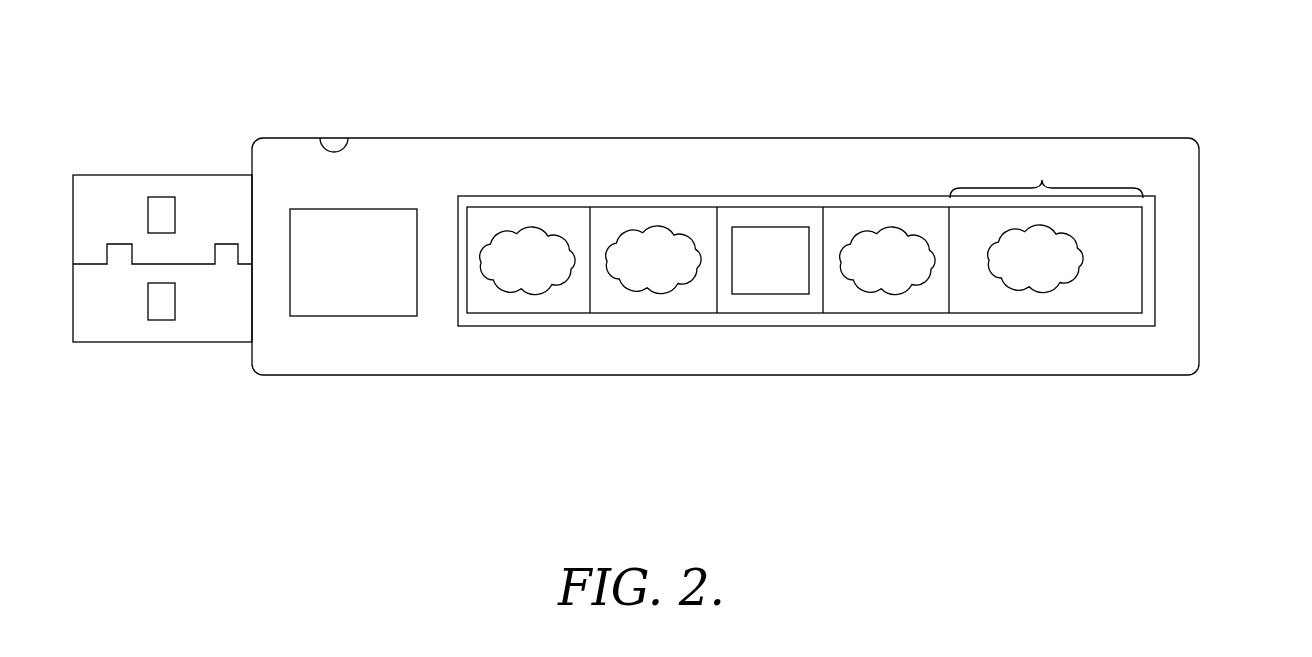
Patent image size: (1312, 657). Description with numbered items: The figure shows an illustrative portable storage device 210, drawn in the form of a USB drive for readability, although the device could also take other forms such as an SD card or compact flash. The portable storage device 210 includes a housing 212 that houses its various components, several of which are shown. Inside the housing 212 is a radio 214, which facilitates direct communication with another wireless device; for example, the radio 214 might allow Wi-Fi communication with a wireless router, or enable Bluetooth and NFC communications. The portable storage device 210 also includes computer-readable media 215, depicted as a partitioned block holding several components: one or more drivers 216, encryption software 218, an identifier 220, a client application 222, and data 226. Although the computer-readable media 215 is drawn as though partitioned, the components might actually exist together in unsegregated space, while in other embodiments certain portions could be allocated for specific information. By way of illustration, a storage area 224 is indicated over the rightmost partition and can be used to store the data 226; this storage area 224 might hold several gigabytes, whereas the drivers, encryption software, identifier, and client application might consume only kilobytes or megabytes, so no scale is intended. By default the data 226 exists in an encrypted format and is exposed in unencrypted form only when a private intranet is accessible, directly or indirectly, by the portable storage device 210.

The portable storage device 210 is at (1153, 133).
The housing 212 is at (347, 138).
The radio 214 is at (347, 316).
The computer-readable media 215 is at (540, 197).
The drivers 216 is at (485, 437).
The encryption software 218 is at (693, 417).
The identifier 220 is at (788, 272).
The client application 222 is at (905, 272).
The storage area 224 is at (1042, 182).
The data 226 is at (1055, 271).